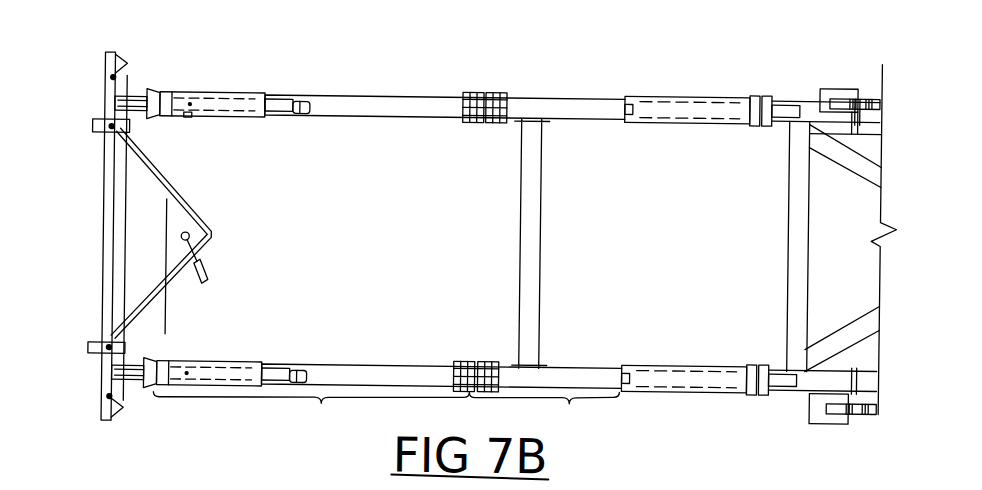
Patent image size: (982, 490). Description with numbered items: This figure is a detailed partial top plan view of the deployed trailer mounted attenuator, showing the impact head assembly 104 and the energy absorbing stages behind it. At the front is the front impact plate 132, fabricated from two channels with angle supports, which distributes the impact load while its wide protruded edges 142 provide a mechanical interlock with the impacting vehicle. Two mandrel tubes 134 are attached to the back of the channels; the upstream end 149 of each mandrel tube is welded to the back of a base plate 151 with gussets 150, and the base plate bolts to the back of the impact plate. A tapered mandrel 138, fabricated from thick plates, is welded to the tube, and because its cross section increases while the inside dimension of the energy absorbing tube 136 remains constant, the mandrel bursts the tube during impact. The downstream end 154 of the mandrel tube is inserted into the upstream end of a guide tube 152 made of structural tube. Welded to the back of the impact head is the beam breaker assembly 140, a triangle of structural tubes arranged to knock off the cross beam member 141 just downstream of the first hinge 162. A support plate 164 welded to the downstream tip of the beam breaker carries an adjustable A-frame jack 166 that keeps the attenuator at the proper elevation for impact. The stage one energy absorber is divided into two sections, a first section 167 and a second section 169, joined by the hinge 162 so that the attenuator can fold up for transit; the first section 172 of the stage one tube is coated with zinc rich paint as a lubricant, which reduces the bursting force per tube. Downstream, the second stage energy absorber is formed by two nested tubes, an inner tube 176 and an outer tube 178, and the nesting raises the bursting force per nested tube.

The impact head assembly 104 is at (75, 182).
The front impact plate 132 is at (106, 210).
The mandrel tube 134 is at (282, 83).
The energy absorbing tube 136 is at (218, 91).
The tapered mandrel 138 is at (152, 87).
The beam breaker assembly 140 is at (159, 177).
The cross beam member 141 is at (547, 230).
The protruded edges 142 is at (125, 60).
The upstream end of the mandrel tube 149 is at (138, 96).
The gussets 150 is at (126, 360).
The base plate 151 is at (119, 405).
The guide tube 152 is at (171, 362).
The downstream end of the mandrel tube 154 is at (303, 365).
The hinge 162 is at (488, 86).
The support plate 164 is at (178, 216).
The A-frame jack 166 is at (205, 246).
The first section of the stage one energy absorber 167 is at (311, 413).
The second section of the stage one energy absorber 169 is at (544, 414).
The first section of the stage one energy absorbing tube 172 is at (188, 112).
The inner tube 176 is at (600, 100).
The outer tube 178 is at (725, 90).